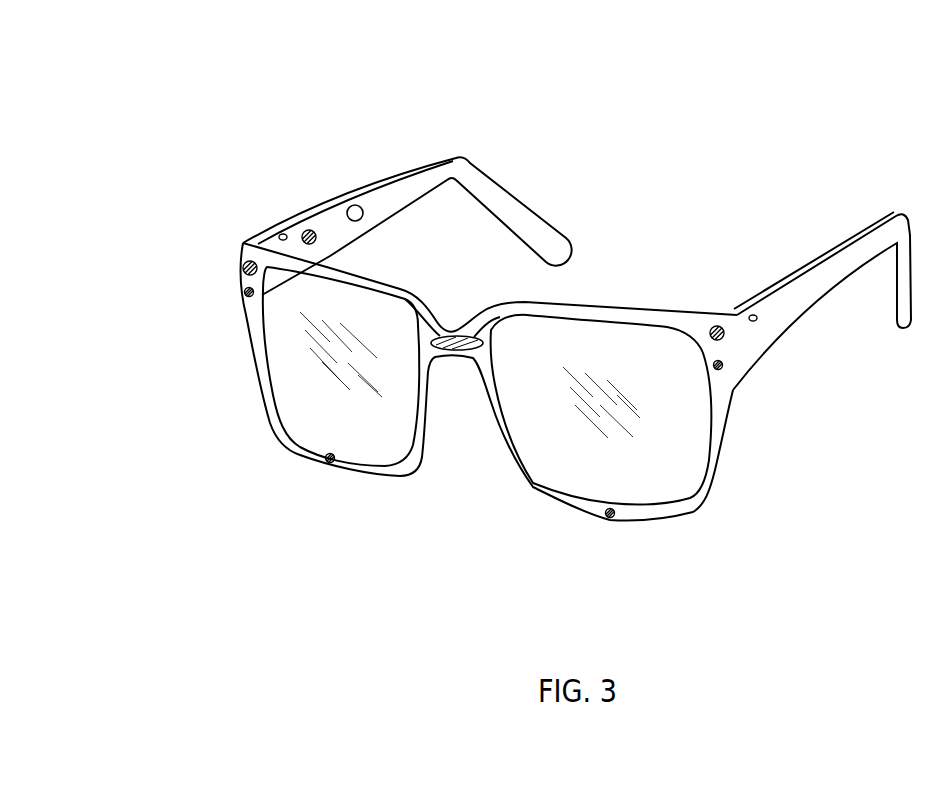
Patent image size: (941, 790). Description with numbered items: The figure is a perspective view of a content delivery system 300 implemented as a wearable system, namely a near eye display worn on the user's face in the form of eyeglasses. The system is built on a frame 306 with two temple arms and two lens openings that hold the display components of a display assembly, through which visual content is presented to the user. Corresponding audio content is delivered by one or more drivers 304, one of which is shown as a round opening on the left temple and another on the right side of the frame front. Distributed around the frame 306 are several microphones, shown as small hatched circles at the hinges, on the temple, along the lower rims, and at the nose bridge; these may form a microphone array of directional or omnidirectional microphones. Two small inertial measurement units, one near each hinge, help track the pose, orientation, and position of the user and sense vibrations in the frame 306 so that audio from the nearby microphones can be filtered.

The content delivery system 300 is at (128, 76).
The driver 304 is at (349, 206).
The frame 306 is at (628, 284).